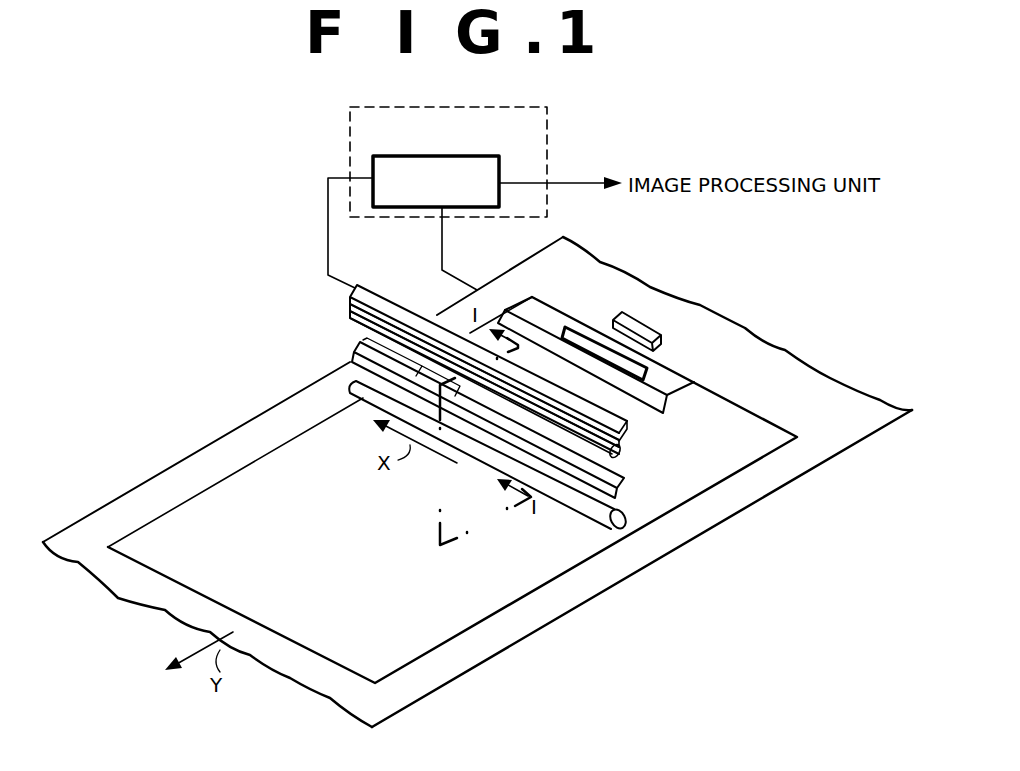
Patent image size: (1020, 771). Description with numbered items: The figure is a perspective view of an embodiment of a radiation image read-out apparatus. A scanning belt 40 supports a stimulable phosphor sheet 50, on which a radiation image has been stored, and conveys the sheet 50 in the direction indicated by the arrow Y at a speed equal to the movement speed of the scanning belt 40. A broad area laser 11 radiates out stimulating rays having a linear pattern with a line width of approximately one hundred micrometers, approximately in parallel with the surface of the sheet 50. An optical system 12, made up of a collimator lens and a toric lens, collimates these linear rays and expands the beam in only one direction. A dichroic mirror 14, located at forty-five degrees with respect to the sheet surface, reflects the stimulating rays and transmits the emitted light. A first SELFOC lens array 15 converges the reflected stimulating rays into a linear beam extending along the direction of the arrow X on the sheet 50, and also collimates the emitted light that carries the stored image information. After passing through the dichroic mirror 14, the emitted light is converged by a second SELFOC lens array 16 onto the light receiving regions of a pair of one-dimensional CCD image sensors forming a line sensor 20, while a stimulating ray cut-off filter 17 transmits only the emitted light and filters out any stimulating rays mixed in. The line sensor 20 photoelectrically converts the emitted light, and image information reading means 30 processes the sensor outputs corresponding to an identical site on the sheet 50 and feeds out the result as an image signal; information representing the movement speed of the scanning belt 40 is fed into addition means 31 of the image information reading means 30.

The broad area laser 11 is at (617, 314).
The optical system 12 is at (673, 406).
The dichroic mirror 14 is at (357, 355).
The first SELFOC lens array 15 is at (352, 385).
The second SELFOC lens array 16 is at (628, 453).
The stimulating ray cut-off filter 17 is at (629, 443).
The line sensor 20 is at (377, 295).
The image information reading means 30 is at (549, 156).
The addition means 31 is at (447, 156).
The scanning belt 40 is at (818, 368).
The stimulable phosphor sheet 50 is at (460, 623).